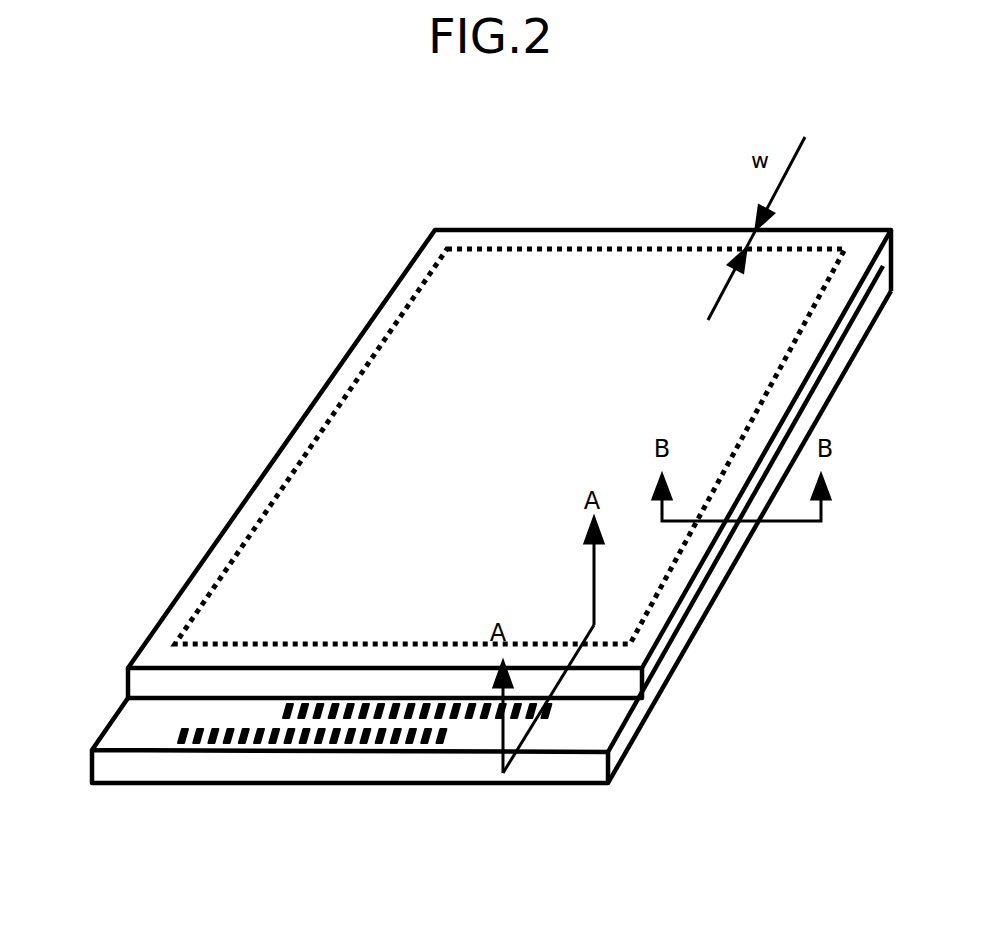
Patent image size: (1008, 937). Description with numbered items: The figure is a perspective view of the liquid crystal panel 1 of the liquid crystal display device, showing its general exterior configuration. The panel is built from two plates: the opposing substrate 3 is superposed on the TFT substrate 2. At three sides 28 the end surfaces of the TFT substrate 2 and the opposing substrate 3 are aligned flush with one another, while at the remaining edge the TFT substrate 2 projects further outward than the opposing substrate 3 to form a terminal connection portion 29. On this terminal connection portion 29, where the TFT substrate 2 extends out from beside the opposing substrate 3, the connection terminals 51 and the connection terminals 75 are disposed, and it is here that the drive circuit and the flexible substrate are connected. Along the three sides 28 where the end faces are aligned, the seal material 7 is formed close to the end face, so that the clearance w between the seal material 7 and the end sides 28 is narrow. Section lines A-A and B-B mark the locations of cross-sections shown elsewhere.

The liquid crystal panel 1 is at (509, 456).
The TFT substrate 2 is at (670, 666).
The opposing substrate 3 is at (700, 585).
The seal material 7 is at (478, 248).
The three sides 28 is at (333, 352).
The terminal connection portion 29 is at (379, 762).
The connection terminals 51 is at (553, 710).
The connection terminals 75 is at (340, 735).